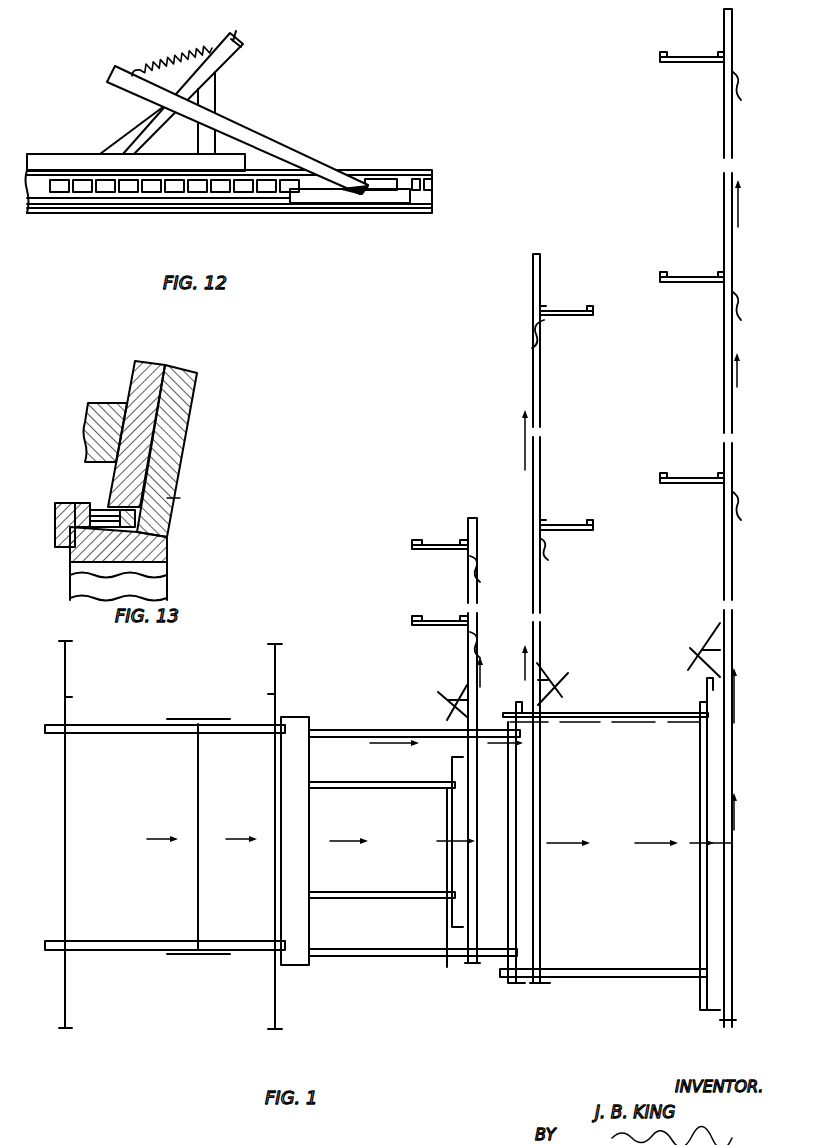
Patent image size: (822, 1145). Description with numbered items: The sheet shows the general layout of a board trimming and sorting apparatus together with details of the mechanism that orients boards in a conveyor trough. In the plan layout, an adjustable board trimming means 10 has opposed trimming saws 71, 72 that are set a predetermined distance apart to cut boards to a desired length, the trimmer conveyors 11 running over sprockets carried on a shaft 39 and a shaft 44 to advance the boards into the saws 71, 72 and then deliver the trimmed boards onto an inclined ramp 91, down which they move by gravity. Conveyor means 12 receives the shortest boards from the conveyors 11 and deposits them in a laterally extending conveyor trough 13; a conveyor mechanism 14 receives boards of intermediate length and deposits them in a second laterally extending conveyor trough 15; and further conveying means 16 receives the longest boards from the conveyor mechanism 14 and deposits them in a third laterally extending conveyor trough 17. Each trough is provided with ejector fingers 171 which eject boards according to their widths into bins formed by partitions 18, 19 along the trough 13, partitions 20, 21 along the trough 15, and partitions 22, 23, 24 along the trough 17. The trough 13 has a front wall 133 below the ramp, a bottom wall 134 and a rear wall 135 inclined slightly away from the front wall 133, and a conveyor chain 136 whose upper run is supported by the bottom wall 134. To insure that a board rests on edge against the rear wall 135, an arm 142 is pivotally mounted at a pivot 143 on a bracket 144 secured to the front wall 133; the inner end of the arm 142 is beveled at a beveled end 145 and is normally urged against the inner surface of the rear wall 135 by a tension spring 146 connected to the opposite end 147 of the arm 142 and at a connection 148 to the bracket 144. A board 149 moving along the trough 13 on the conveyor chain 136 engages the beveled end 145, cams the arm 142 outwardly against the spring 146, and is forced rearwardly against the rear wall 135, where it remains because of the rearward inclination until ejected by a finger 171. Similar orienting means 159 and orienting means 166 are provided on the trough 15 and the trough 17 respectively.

In FIG. 1, the adjustable board trimming means 10 is at (197, 890).
In FIG. 1, the conveyors 11 is at (118, 734).
In FIG. 1, the conveyor means 12 is at (375, 783).
In FIG. 12, the laterally extending conveyor trough 13 is at (233, 185).
In FIG. 13, the laterally extending conveyor trough 13 is at (172, 498).
In FIG. 1, the laterally extending conveyor trough 13 is at (473, 808).
In FIG. 1, the conveyor mechanism 14 is at (393, 731).
In FIG. 1, the second laterally extending conveyor trough 15 is at (539, 812).
In FIG. 1, the conveying means 16 is at (633, 713).
In FIG. 1, the third laterally extending conveyor trough 17 is at (730, 781).
In FIG. 1, the partition 18 is at (432, 631).
In FIG. 1, the partition 19 is at (426, 548).
In FIG. 1, the partition 20 is at (580, 527).
In FIG. 1, the partition 21 is at (583, 317).
In FIG. 1, the partition 22 is at (691, 486).
In FIG. 1, the partition 23 is at (691, 283).
In FIG. 1, the partition 24 is at (692, 63).
In FIG. 1, the shaft 39 is at (66, 696).
In FIG. 1, the shaft 44 is at (274, 695).
In FIG. 1, the trimming saw 71 is at (210, 719).
In FIG. 1, the trimming saw 72 is at (210, 955).
In FIG. 1, the inclined ramp 91 is at (295, 966).
In FIG. 12, the front wall 133 is at (63, 153).
In FIG. 13, the front wall 133 is at (58, 518).
In FIG. 13, the bottom wall 134 is at (160, 545).
In FIG. 12, the rear wall 135 is at (371, 258).
In FIG. 13, the rear wall 135 is at (187, 428).
In FIG. 12, the conveyor chain 136 is at (78, 192).
In FIG. 13, the conveyor chain 136 is at (80, 505).
In FIG. 12, the arm 142 is at (293, 140).
In FIG. 13, the arm 142 is at (95, 418).
In FIG. 12, the pivot 143 is at (153, 104).
In FIG. 12, the bracket 144 is at (145, 134).
In FIG. 12, the beveled end 145 is at (349, 186).
In FIG. 12, the tension spring 146 is at (182, 52).
In FIG. 12, the opposite end of arm 147 is at (136, 68).
In FIG. 12, the spring connection on bracket 148 is at (241, 48).
In FIG. 12, the board 149 is at (313, 203).
In FIG. 13, the board 149 is at (140, 372).
In FIG. 1, the orienting means 159 is at (549, 673).
In FIG. 1, the orienting means 166 is at (715, 626).
In FIG. 1, the ejector finger 171 is at (479, 573).